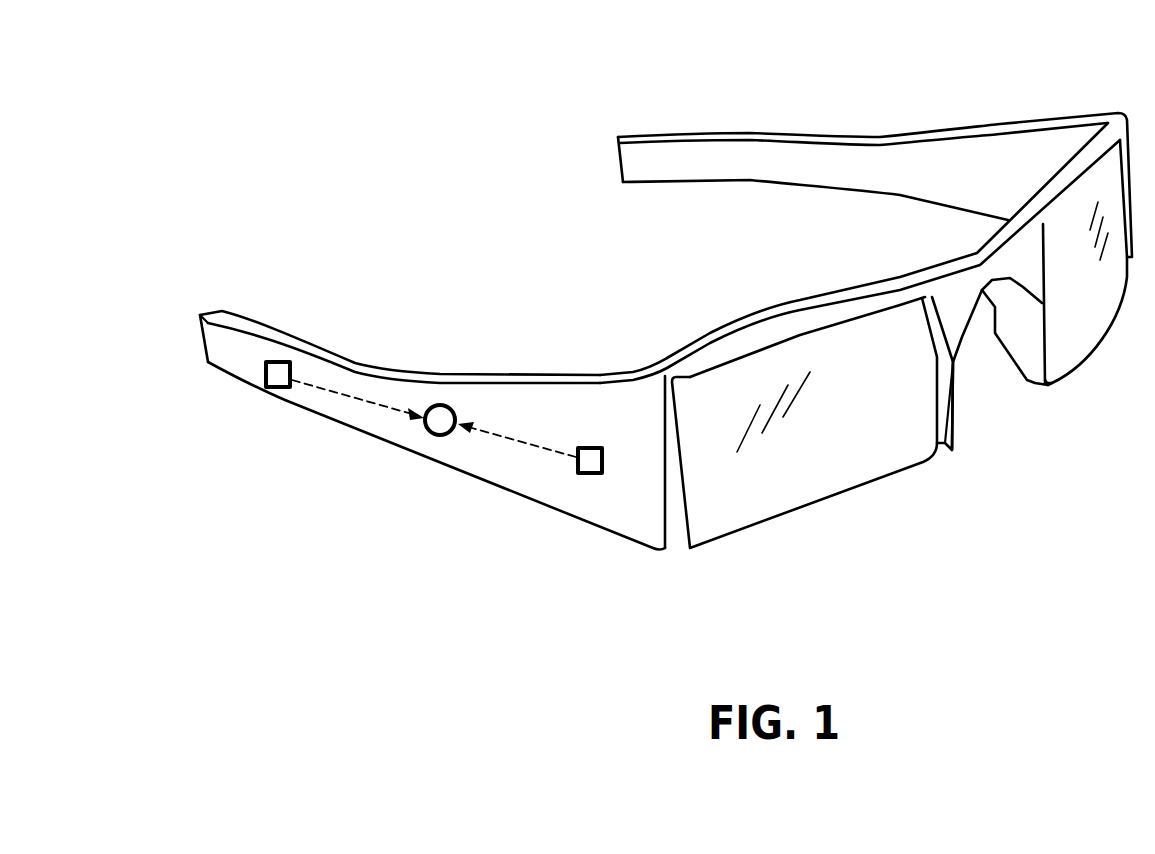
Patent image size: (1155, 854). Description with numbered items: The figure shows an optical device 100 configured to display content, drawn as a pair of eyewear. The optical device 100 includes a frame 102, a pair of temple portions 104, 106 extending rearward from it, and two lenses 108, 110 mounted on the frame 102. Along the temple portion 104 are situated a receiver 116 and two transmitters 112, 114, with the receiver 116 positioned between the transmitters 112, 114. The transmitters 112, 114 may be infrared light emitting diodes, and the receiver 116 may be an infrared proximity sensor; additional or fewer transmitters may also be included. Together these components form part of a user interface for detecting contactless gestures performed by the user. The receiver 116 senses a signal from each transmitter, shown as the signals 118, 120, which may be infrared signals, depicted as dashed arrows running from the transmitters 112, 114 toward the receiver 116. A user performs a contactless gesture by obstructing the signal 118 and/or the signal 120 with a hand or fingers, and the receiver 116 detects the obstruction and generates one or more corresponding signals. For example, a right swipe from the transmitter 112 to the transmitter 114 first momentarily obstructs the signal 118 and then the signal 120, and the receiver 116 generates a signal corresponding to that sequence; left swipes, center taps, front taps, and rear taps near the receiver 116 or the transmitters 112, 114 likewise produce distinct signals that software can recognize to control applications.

The optical device 100 is at (110, 102).
The frame 102 is at (789, 325).
The temple portion 104 is at (356, 366).
The temple portion 106 is at (760, 140).
The lens 108 is at (830, 483).
The lens 110 is at (1102, 300).
The transmitter 112 is at (282, 360).
The transmitter 114 is at (592, 447).
The receiver 116 is at (441, 405).
The signal 118 is at (380, 408).
The signal 120 is at (503, 440).